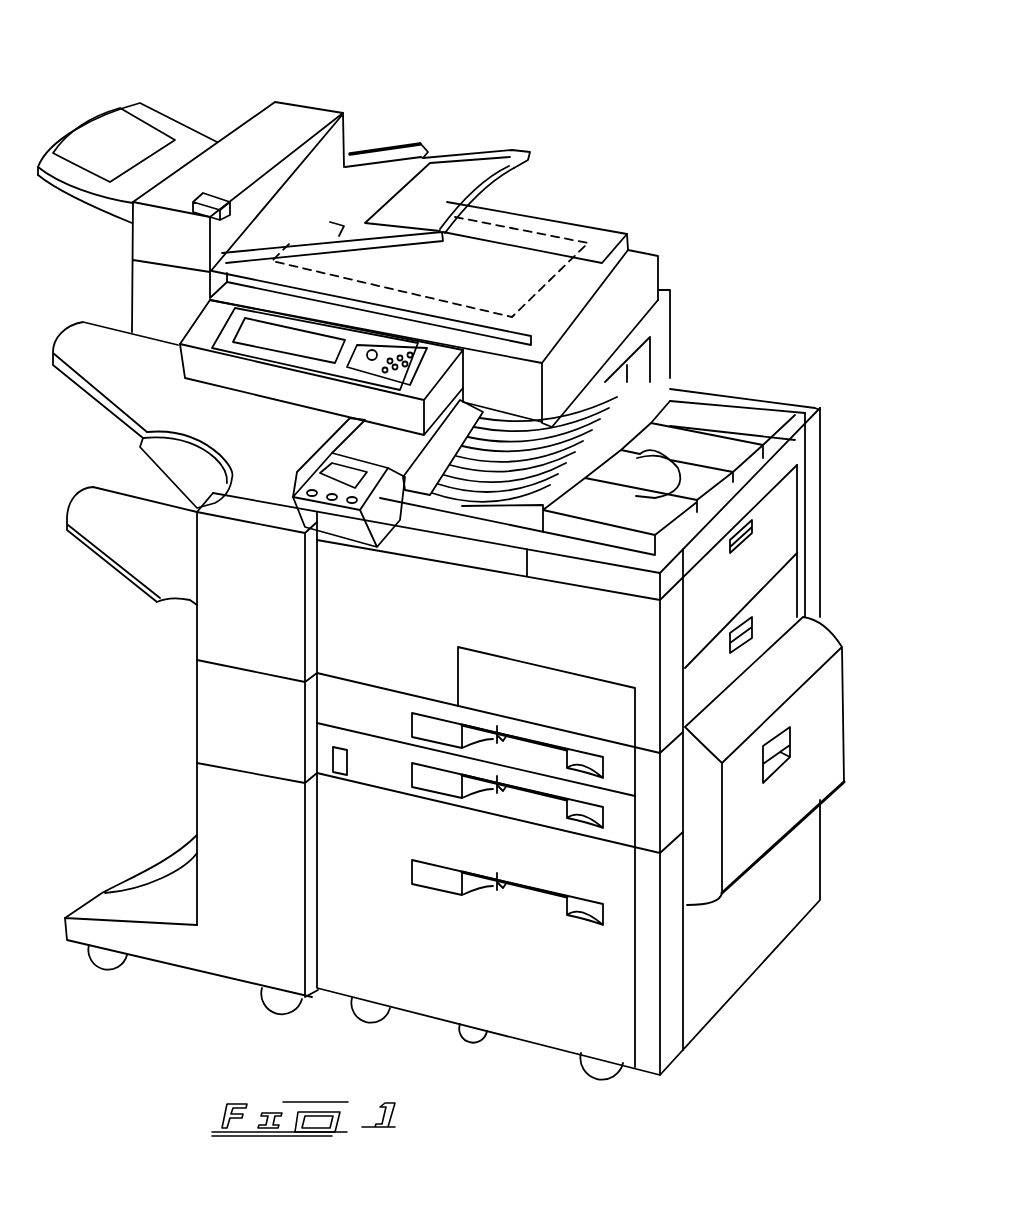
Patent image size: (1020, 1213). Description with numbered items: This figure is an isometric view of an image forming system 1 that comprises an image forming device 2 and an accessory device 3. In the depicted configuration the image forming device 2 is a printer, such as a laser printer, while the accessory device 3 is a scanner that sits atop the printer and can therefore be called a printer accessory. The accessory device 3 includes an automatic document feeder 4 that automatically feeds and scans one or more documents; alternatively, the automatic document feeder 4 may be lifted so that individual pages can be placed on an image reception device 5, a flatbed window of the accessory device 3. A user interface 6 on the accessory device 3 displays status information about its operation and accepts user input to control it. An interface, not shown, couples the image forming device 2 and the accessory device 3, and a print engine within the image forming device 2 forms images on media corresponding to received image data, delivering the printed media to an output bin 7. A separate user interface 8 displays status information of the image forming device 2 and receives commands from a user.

The image forming system 1 is at (690, 48).
The image forming device 2 is at (838, 402).
The accessory device 3 is at (677, 272).
The automatic document feeder 4 is at (387, 127).
The image reception device 5 is at (537, 224).
The user interface 6 is at (260, 367).
The output bin 7 is at (624, 398).
The user interface 8 is at (336, 514).